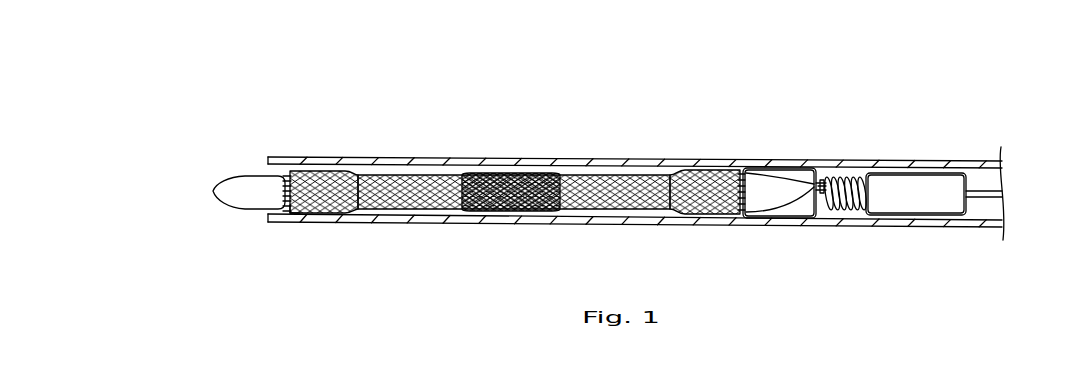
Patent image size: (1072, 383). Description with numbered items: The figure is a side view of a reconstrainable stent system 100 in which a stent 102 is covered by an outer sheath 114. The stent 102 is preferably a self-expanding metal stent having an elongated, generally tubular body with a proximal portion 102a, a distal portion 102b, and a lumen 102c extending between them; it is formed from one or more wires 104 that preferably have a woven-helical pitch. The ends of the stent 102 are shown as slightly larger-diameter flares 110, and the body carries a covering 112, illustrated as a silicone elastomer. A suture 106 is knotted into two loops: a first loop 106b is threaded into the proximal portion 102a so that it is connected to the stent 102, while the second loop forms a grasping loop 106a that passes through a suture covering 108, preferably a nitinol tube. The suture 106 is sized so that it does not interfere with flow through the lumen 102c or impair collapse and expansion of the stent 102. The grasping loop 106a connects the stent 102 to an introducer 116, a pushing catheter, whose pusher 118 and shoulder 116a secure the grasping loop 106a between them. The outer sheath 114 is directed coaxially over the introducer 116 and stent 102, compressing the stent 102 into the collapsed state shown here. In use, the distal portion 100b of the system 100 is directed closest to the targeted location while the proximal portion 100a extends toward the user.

The reconstrainable stent system 100 is at (681, 110).
The proximal portion 100a is at (960, 137).
The distal portion 100b is at (302, 135).
The stent 102 is at (524, 190).
The proximal portion 102a is at (735, 210).
The distal portion 102b is at (295, 212).
The lumen 102c is at (284, 205).
The wires 104 is at (488, 208).
The suture 106 is at (828, 168).
The grasping loop 106a is at (840, 208).
The first loop 106b is at (822, 210).
The suture covering 108 is at (840, 178).
The flares 110 is at (311, 172).
The covering 112 is at (453, 176).
The outer sheath 114 is at (386, 160).
The introducer 116 is at (231, 182).
The shoulder 116a is at (910, 205).
The pusher 118 is at (764, 178).